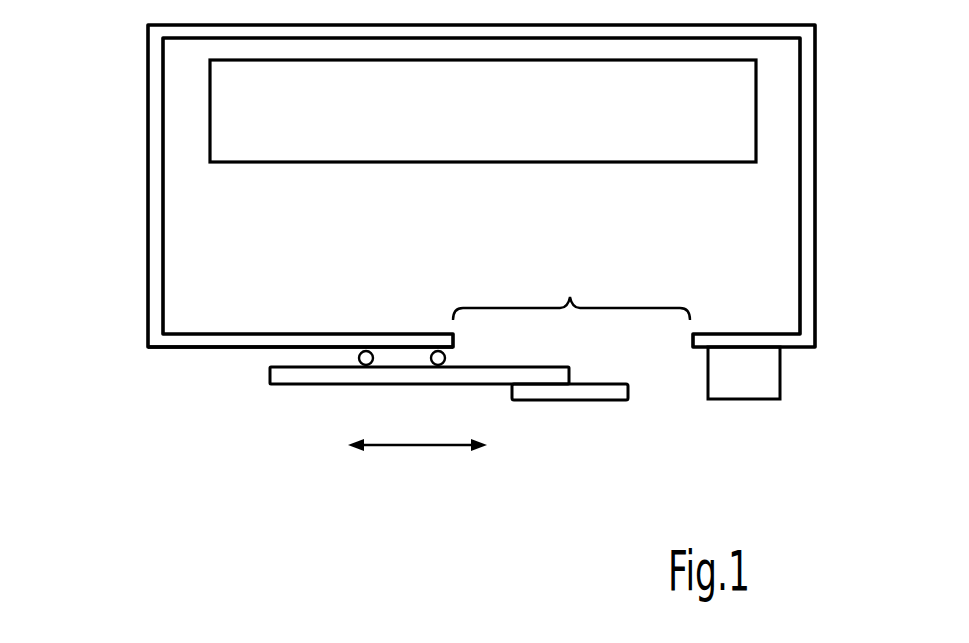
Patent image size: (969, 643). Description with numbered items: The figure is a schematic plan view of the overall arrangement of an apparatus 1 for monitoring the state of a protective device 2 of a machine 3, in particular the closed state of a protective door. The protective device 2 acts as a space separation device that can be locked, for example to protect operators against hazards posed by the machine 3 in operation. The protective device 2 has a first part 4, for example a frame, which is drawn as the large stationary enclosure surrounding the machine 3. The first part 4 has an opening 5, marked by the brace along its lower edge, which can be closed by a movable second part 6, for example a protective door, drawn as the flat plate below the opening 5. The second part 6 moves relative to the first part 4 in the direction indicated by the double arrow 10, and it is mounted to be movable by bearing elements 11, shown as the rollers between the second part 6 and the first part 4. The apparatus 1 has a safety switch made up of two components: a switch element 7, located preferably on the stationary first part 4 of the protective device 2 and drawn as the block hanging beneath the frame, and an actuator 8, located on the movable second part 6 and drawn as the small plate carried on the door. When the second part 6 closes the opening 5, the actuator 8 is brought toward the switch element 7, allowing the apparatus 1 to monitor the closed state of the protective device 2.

The apparatus 1 is at (653, 441).
The protective device 2 is at (128, 169).
The machine 3 is at (248, 116).
The first part 4 is at (160, 348).
The opening 5 is at (571, 291).
The second part 6 is at (270, 375).
The switch element 7 is at (748, 367).
The actuator 8 is at (550, 390).
The double arrow 10 is at (423, 445).
The bearing elements 11 is at (447, 358).